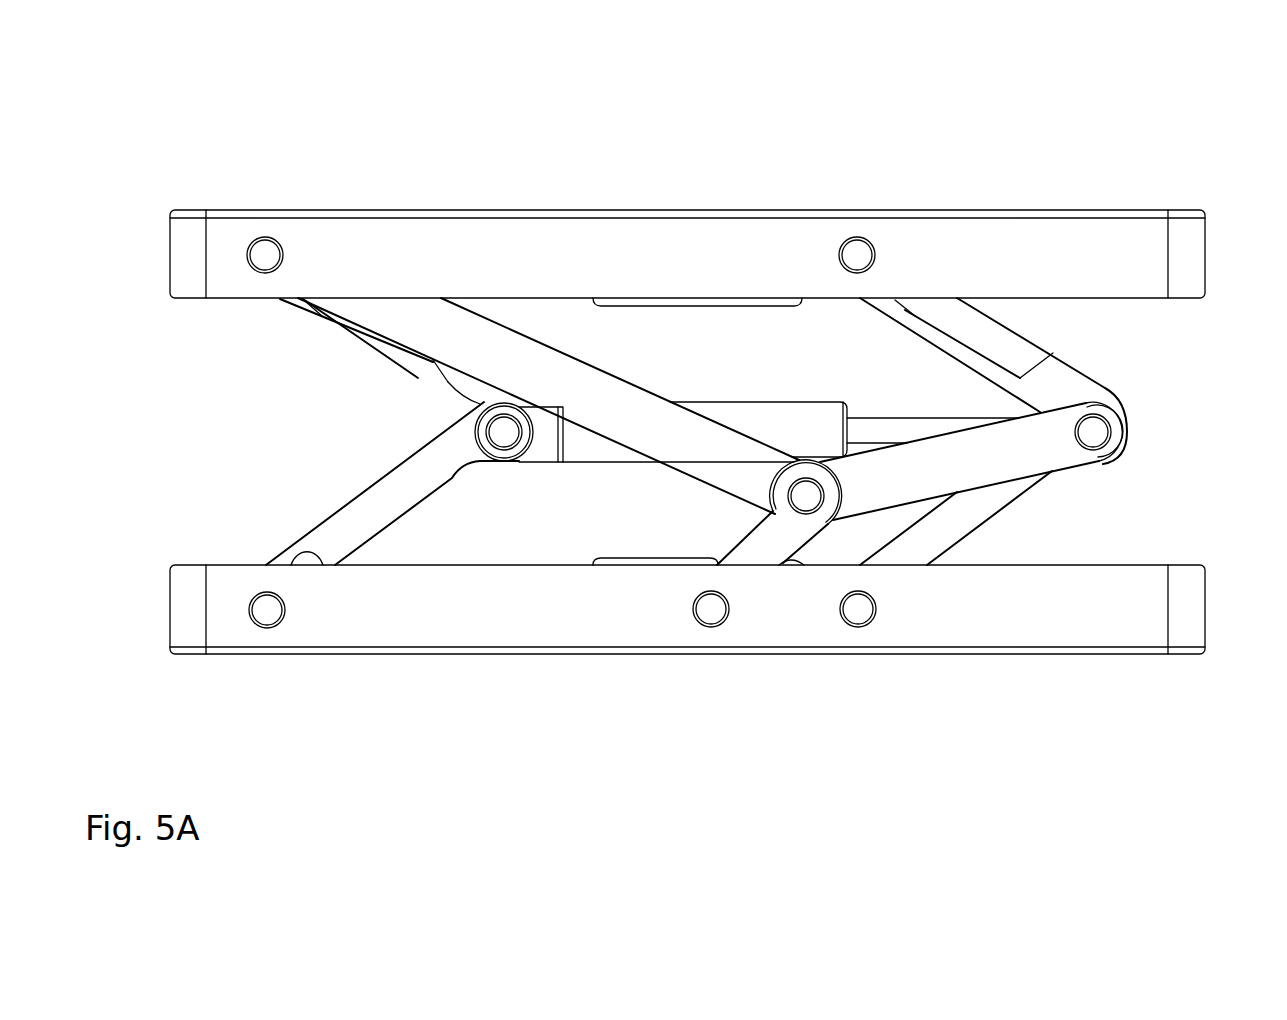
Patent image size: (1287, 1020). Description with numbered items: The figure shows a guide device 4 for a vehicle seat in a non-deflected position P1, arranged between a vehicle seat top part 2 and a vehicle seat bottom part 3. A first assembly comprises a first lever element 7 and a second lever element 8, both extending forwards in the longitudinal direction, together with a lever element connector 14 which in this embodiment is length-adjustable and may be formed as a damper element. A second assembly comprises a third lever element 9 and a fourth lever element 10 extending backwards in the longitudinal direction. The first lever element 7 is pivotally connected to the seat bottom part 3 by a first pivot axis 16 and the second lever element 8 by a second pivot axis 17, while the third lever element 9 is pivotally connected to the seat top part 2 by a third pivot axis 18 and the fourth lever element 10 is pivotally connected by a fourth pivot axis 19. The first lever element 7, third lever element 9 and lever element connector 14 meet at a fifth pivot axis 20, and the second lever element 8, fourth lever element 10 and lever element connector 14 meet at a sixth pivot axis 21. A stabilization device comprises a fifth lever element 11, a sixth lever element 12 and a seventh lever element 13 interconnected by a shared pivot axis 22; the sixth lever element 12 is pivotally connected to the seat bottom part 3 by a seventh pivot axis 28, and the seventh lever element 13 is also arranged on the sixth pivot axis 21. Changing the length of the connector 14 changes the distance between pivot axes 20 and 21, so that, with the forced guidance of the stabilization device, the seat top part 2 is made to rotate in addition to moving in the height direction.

The vehicle seat top part 2 is at (1050, 240).
The vehicle seat bottom part 3 is at (505, 630).
The guide device 4 is at (262, 398).
The first lever element 7 is at (392, 484).
The second lever element 8 is at (965, 522).
The third lever element 9 is at (455, 397).
The fourth lever element 10 is at (1010, 345).
The fifth lever element 11 is at (594, 360).
The sixth lever element 12 is at (778, 543).
The seventh lever element 13 is at (903, 462).
The lever element connector 14 is at (583, 455).
The first pivot axis 16 is at (266, 615).
The second pivot axis 17 is at (858, 613).
The third pivot axis 18 is at (266, 252).
The fourth pivot axis 19 is at (857, 252).
The fifth pivot axis 20 is at (507, 440).
The sixth pivot axis 21 is at (1105, 433).
The shared pivot axis 22 is at (806, 492).
The seventh pivot axis 28 is at (711, 613).
The non-deflected position P1 is at (1207, 95).